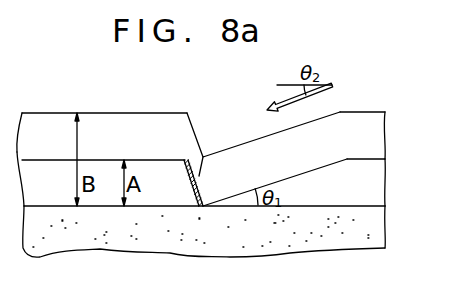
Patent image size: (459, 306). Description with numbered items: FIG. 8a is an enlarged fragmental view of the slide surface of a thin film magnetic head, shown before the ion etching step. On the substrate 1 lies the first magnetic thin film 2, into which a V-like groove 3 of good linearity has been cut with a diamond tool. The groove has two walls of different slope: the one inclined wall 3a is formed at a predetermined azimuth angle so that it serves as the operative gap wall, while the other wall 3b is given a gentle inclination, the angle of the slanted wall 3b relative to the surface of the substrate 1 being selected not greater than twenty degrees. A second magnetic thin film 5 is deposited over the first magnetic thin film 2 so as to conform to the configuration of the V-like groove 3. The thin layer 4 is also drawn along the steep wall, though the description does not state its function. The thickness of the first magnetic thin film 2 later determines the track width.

The substrate 1 is at (384, 227).
The first magnetic thin film 2 is at (384, 185).
The V-like groove 3 is at (203, 157).
The inclined gap wall 3a is at (195, 207).
The gently inclined wall 3b is at (318, 169).
The thin layer 4 is at (189, 175).
The second magnetic thin film 5 is at (384, 137).